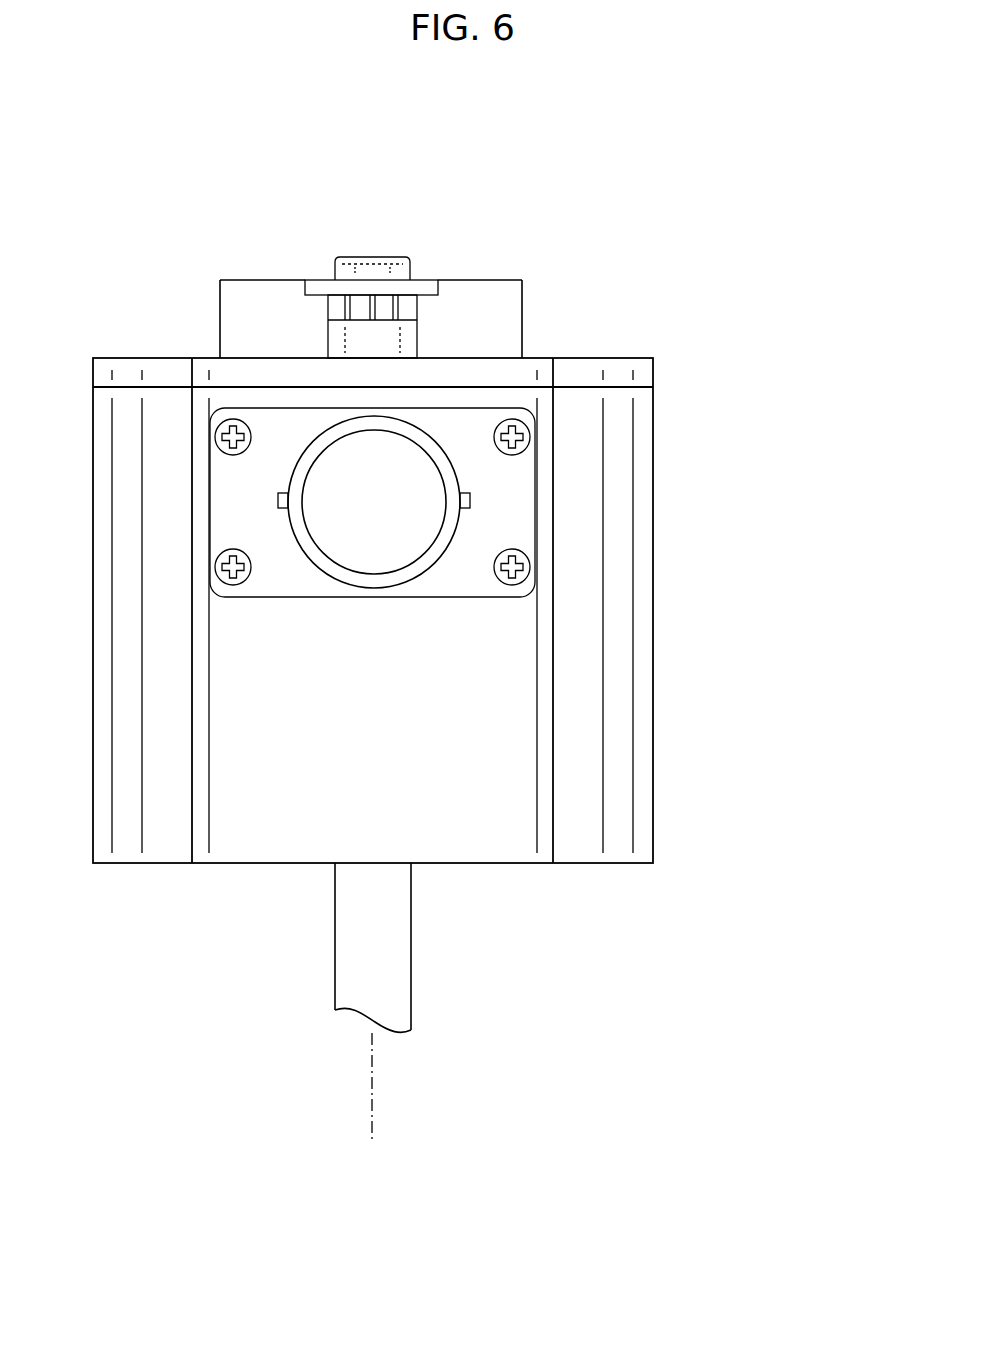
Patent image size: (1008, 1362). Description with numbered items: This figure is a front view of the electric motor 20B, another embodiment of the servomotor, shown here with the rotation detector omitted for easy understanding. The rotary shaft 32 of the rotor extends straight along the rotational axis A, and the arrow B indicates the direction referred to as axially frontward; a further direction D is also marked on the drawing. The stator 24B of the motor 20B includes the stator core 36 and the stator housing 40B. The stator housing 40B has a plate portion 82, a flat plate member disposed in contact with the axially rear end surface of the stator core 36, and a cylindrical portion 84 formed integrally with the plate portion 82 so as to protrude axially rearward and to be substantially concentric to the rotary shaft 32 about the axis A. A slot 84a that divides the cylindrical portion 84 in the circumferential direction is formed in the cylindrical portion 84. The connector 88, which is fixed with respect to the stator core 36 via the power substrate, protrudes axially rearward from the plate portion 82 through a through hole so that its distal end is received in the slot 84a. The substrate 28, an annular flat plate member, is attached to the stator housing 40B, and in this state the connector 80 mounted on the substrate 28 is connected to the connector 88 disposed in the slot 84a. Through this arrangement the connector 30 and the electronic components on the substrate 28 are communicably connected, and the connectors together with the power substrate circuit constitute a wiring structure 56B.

The electric motor 20B is at (768, 121).
The stator 24B is at (722, 453).
The substrate 28 is at (475, 280).
The connector 30 is at (398, 580).
The rotary shaft 32 is at (411, 955).
The stator core 36 is at (653, 688).
The stator housing 40B is at (620, 330).
The wiring structure 56B is at (416, 203).
The connector 80 is at (372, 255).
The plate portion 82 is at (642, 373).
The cylindrical portion 84 is at (485, 341).
The slot 84a is at (330, 307).
The connector 88 is at (332, 350).
The direction D is at (736, 598).
The rotational axis A is at (372, 1085).
The arrow B is at (372, 1167).